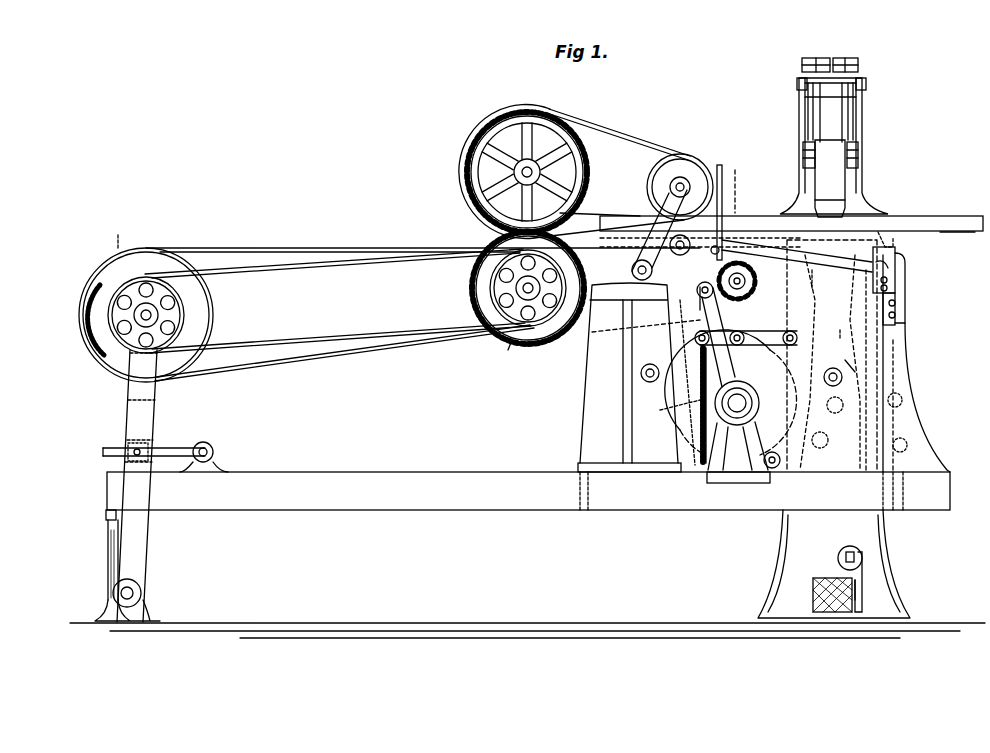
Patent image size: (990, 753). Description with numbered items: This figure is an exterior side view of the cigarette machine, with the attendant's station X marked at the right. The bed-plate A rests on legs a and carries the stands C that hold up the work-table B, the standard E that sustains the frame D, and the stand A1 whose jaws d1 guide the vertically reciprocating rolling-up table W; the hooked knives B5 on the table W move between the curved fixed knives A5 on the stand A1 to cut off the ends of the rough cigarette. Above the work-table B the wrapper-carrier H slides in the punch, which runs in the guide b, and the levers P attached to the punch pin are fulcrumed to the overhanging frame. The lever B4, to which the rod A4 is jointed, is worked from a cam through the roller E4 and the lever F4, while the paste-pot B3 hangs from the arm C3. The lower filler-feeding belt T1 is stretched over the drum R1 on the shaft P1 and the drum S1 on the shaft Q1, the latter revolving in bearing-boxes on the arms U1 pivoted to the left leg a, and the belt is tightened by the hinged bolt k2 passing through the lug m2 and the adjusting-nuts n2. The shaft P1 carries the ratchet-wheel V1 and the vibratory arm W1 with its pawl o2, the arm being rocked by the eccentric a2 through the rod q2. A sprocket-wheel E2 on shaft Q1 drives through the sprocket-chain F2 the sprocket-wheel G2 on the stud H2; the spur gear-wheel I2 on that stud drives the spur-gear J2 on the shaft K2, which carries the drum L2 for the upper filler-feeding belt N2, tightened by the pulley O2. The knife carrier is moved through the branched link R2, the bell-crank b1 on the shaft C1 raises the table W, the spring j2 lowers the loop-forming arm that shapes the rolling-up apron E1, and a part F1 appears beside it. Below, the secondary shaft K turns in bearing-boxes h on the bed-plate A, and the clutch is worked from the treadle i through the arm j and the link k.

The attendant's station X is at (527, 644).
The bed-plate A is at (522, 546).
The shaft Q1 is at (95, 350).
The drum S1 is at (210, 315).
The second sprocket-wheel E2 is at (121, 227).
The lower filler-feeding belt T1 is at (340, 360).
The sprocket-chain F2 is at (316, 340).
The spur gear-wheel I2 is at (470, 290).
The stud H2 is at (535, 350).
The sprocket-wheel G2 is at (501, 364).
The shaft K2 is at (570, 122).
The second spur-gear J2 is at (509, 120).
The upper filler-feeding belt N2 is at (612, 146).
The drum L2 is at (609, 210).
The tightening-pulley O2 is at (680, 172).
The frame D is at (644, 235).
The pawl o2 is at (699, 263).
The work-table B is at (915, 216).
The ratchet-wheel V1 is at (733, 208).
The shaft P1 is at (748, 191).
The wrapper-carrier H is at (845, 125).
The guide b is at (830, 178).
The levers P is at (803, 150).
The lever F4 is at (814, 51).
The lever B4 is at (857, 51).
The roller E4 is at (796, 78).
The rod A4 is at (866, 78).
The paste-pot B3 is at (880, 232).
The arm C3 is at (957, 210).
The rolling-up table W is at (896, 252).
The hooked knives B5 is at (935, 252).
The curved fixed knives A5 is at (906, 273).
The jaws d1 is at (906, 300).
The stand A1 is at (908, 360).
The stands C is at (847, 355).
The rolling-up apron E1 is at (823, 282).
The plate F1 is at (839, 338).
The shaft C1 is at (848, 359).
The standard E is at (639, 377).
The drum R1 is at (686, 298).
The vibratory arm W1 is at (731, 335).
The rod q2 is at (742, 296).
The branched link R2 is at (680, 435).
The spring j2 is at (669, 409).
The secondary shaft K is at (690, 470).
The bell-crank b1 is at (731, 376).
The bearing-boxes h is at (752, 486).
The eccentric a2 is at (834, 564).
The treadle i is at (813, 595).
The link k is at (854, 548).
The arm j is at (864, 582).
The arms U1 is at (149, 486).
The legs a is at (142, 590).
The hinged bolt k2 is at (100, 452).
The adjusting-nuts n2 is at (118, 466).
The lug m2 is at (190, 458).